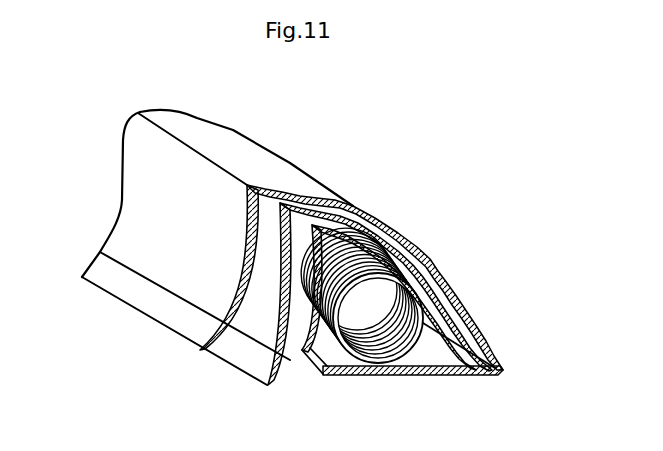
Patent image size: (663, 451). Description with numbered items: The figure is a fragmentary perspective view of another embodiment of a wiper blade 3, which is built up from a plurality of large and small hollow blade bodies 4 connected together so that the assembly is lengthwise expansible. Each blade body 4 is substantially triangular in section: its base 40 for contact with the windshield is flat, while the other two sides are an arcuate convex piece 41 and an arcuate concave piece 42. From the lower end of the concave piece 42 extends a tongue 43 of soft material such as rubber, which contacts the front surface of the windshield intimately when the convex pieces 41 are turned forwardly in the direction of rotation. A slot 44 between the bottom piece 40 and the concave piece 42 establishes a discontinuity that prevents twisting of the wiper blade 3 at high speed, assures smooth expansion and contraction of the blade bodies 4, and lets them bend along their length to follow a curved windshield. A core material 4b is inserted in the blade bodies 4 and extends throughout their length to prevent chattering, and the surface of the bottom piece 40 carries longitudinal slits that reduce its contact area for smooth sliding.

The wiper blade 3 is at (218, 132).
The blade body 4 is at (262, 143).
The convex piece 41 is at (348, 207).
The concave piece 42 is at (178, 263).
The tongue 43 is at (222, 332).
The slot 44 is at (304, 373).
The base (bottom piece) 40 is at (430, 377).
The core material 4b is at (398, 327).